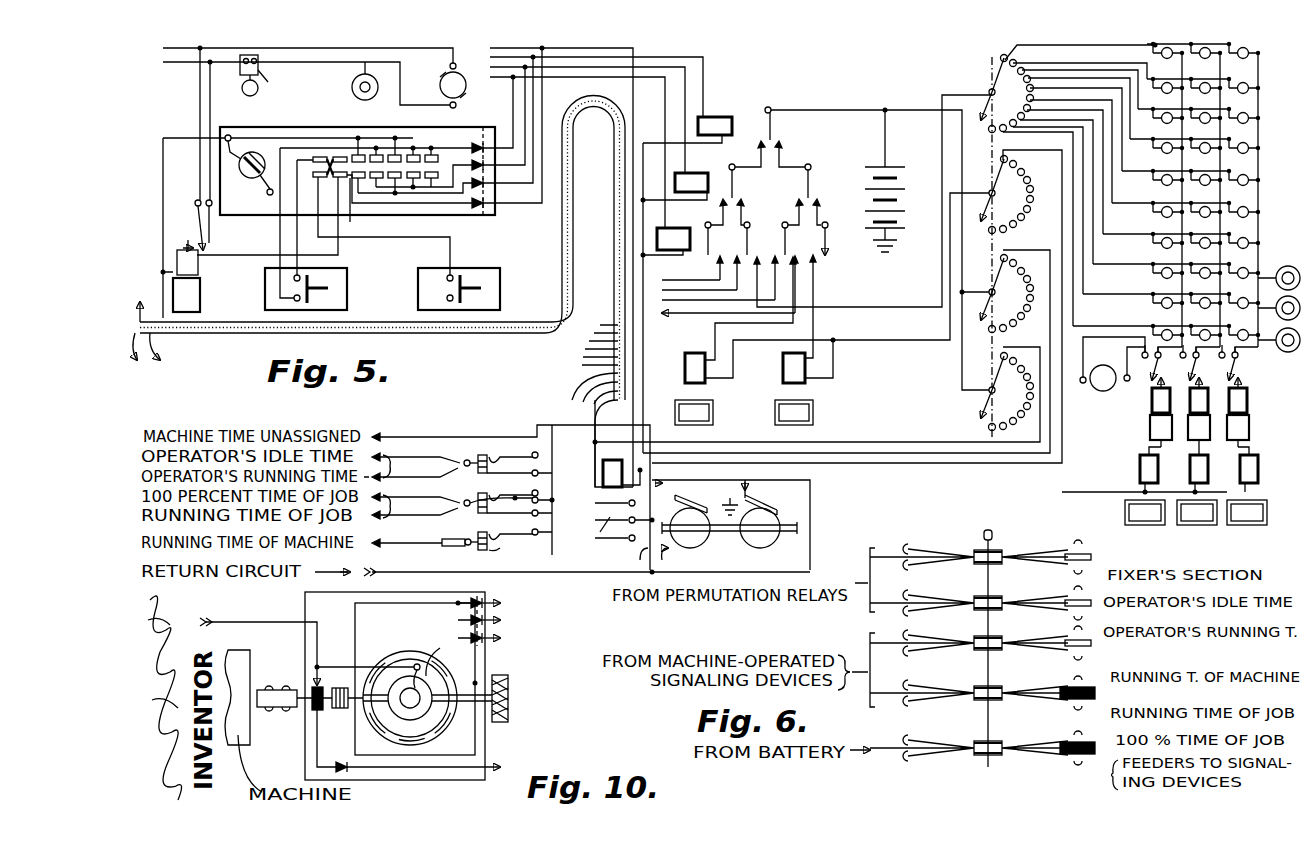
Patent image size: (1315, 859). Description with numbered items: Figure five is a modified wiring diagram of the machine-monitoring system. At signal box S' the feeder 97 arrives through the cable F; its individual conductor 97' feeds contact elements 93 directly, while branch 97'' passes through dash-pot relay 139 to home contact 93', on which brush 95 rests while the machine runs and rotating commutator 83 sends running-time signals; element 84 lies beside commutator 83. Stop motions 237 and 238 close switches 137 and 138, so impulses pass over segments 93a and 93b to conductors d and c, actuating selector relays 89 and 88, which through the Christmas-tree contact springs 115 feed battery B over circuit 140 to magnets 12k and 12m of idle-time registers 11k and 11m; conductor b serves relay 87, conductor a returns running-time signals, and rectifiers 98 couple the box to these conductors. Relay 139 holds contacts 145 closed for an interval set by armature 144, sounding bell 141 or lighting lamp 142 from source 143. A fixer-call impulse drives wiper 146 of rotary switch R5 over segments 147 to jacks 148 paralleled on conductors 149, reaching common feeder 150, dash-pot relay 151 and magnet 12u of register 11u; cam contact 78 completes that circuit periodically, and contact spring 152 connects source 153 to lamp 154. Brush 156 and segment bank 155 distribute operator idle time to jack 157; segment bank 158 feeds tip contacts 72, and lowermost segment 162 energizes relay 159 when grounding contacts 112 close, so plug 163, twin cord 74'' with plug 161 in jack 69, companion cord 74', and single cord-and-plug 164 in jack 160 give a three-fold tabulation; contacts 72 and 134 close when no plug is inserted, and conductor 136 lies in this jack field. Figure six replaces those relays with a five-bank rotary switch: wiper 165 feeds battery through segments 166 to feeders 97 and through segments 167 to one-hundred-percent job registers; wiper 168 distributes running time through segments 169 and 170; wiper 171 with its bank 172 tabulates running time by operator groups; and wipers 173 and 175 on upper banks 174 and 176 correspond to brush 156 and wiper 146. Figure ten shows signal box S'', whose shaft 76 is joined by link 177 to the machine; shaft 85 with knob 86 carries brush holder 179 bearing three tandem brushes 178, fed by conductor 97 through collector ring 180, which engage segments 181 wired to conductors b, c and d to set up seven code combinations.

In FIG. 5, the switch blade 84 is at (228, 152).
In FIG. 5, the individual conductor 97' is at (164, 121).
In FIG. 5, the branch conductor 97'' is at (368, 251).
In FIG. 5, the feeder circuit 97 is at (374, 248).
In FIG. 10, the feeder circuit 97 is at (258, 645).
In FIG. 5, the contact elements 93 is at (376, 151).
In FIG. 5, the contact segment 93a is at (318, 157).
In FIG. 5, the contact segment 93b is at (313, 175).
In FIG. 5, the home contact 93' is at (369, 207).
In FIG. 5, the brush 95 is at (330, 158).
In FIG. 5, the rectifiers 98 is at (478, 147).
In FIG. 10, the rectifiers 98 is at (472, 600).
In FIG. 5, the bell 141 is at (262, 68).
In FIG. 5, the lamp 142 is at (365, 74).
In FIG. 5, the generator 143 is at (446, 76).
In FIG. 5, the rotating commutator 83 is at (258, 180).
In FIG. 5, the relay armature 144 is at (186, 248).
In FIG. 5, the dash-pot relay 139 is at (178, 262).
In FIG. 5, the relay contacts 145 is at (212, 230).
In FIG. 5, the switch 137 is at (292, 290).
In FIG. 5, the stop motion 237 is at (345, 308).
In FIG. 5, the switch 138 is at (445, 290).
In FIG. 5, the stop motion 238 is at (498, 305).
In FIG. 5, the signal box S' is at (357, 187).
In FIG. 5, the feeder cable F is at (583, 226).
In FIG. 5, the conductor a is at (603, 47).
In FIG. 10, the conductor a is at (496, 775).
In FIG. 5, the conductor b is at (700, 56).
In FIG. 10, the conductor b is at (494, 638).
In FIG. 5, the conductor c is at (653, 66).
In FIG. 10, the conductor c is at (494, 620).
In FIG. 5, the conductor d is at (582, 77).
In FIG. 10, the conductor d is at (494, 603).
In FIG. 5, the selector relay 87 is at (715, 118).
In FIG. 5, the selector relay 88 is at (692, 177).
In FIG. 5, the selector relay 89 is at (668, 232).
In FIG. 5, the relay contact springs 115 is at (782, 201).
In FIG. 5, the battery B is at (880, 167).
In FIG. 5, the circuit 140 is at (815, 283).
In FIG. 5, the actuating magnet 12m is at (690, 368).
In FIG. 5, the actuating magnet 12k is at (784, 368).
In FIG. 5, the register 11m is at (683, 412).
In FIG. 5, the register 11k is at (778, 412).
In FIG. 5, the rotary switch R5 is at (990, 56).
In FIG. 5, the wiper 146 is at (992, 92).
In FIG. 5, the segments 147 is at (1012, 92).
In FIG. 5, the plug-in connector jacks 148 is at (1160, 52).
In FIG. 5, the conductor 149 is at (1040, 47).
In FIG. 5, the common feeder circuit 150 is at (1258, 95).
In FIG. 5, the brush 156 is at (1007, 195).
In FIG. 5, the second bank of contact segments 155 is at (1030, 214).
In FIG. 5, the contact segments 158 is at (797, 410).
In FIG. 5, the segment 162 is at (1007, 392).
In FIG. 5, the lamp 154 is at (1288, 266).
In FIG. 5, the source of current 153 is at (1106, 375).
In FIG. 5, the contact spring 152 is at (1150, 392).
In FIG. 5, the dash-pot relays 151 is at (1152, 420).
In FIG. 5, the actuating magnet 12u is at (1140, 468).
In FIG. 5, the register 11u is at (1125, 514).
In FIG. 5, the jack 157 is at (483, 452).
In FIG. 5, the contact 134 is at (517, 495).
In FIG. 5, the relay 159 is at (603, 472).
In FIG. 5, the conductor 136 is at (385, 437).
In FIG. 5, the plug 163 is at (458, 462).
In FIG. 5, the conductors 74' is at (401, 466).
In FIG. 5, the tip contacts 72 is at (490, 498).
In FIG. 5, the twin conductor cord 74'' is at (403, 506).
In FIG. 5, the plug 161 is at (458, 512).
In FIG. 5, the jack 69 is at (487, 500).
In FIG. 5, the single conductor cord-and-plug 164 is at (455, 547).
In FIG. 5, the jack 160 is at (487, 545).
In FIG. 5, the cam operated contact 78 is at (675, 490).
In FIG. 5, the grounding contacts 112 is at (748, 484).
In FIG. 10, the signal box S'' is at (395, 697).
In FIG. 10, the brush collector ring 180 is at (415, 663).
In FIG. 10, the manually operated shaft 85 is at (421, 673).
In FIG. 10, the segments 181 is at (340, 660).
In FIG. 10, the control knob 86 is at (508, 695).
In FIG. 10, the shaft 76 is at (316, 686).
In FIG. 10, the link 177 is at (272, 710).
In FIG. 10, the brushes 178 is at (340, 710).
In FIG. 10, the rotatable brush holder 179 is at (458, 722).
In FIG. 6, the upper contact bank 176 is at (1093, 556).
In FIG. 6, the wiper 175 is at (1040, 575).
In FIG. 6, the upper contact bank 174 is at (1097, 606).
In FIG. 6, the wiper 173 is at (1040, 610).
In FIG. 6, the collector ring 172 is at (1100, 640).
In FIG. 6, the wiper 171 is at (1042, 655).
In FIG. 6, the segments 170 is at (1097, 694).
In FIG. 6, the segments 169 is at (1044, 708).
In FIG. 6, the wiper 168 is at (975, 690).
In FIG. 6, the segments 167 is at (1042, 763).
In FIG. 6, the segments 166 is at (1090, 762).
In FIG. 6, the wiper 165 is at (975, 745).